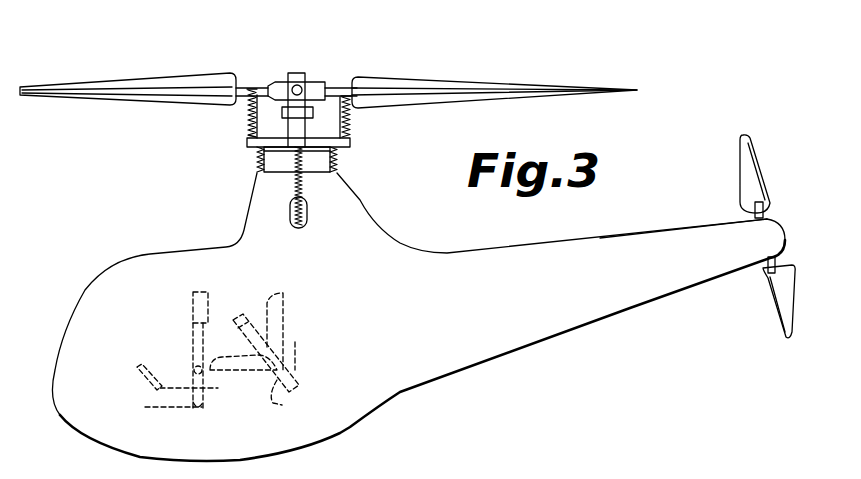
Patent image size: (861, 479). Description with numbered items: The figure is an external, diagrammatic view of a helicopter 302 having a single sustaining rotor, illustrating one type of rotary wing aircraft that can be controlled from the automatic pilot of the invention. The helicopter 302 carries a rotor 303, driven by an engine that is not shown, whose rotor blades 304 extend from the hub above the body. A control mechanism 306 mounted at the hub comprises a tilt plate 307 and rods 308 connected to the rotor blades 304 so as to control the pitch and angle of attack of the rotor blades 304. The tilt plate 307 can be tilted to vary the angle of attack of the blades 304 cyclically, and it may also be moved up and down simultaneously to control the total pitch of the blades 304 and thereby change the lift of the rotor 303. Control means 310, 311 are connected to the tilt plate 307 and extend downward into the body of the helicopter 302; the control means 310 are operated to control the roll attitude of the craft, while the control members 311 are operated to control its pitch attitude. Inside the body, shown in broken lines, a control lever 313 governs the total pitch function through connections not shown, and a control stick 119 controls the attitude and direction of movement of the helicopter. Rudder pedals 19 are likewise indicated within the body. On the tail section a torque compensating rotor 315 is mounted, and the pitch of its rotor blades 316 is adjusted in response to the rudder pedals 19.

The helicopter 302 is at (473, 305).
The rotor 303 is at (364, 62).
The rotor blades 304 is at (152, 102).
The control mechanism 306 is at (243, 125).
The tilt plate 307 is at (345, 147).
The rods 308 is at (247, 116).
The control means 310 is at (303, 195).
The control means 311 is at (257, 161).
The control lever 313 is at (260, 356).
The control stick 119 is at (212, 294).
The rudder pedals 19 is at (148, 368).
The torque compensating rotor 315 is at (727, 295).
The rotor blades 316 is at (740, 184).